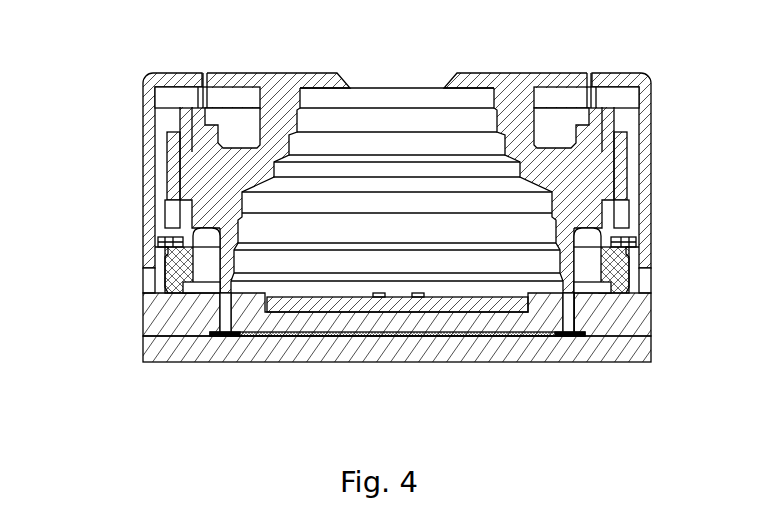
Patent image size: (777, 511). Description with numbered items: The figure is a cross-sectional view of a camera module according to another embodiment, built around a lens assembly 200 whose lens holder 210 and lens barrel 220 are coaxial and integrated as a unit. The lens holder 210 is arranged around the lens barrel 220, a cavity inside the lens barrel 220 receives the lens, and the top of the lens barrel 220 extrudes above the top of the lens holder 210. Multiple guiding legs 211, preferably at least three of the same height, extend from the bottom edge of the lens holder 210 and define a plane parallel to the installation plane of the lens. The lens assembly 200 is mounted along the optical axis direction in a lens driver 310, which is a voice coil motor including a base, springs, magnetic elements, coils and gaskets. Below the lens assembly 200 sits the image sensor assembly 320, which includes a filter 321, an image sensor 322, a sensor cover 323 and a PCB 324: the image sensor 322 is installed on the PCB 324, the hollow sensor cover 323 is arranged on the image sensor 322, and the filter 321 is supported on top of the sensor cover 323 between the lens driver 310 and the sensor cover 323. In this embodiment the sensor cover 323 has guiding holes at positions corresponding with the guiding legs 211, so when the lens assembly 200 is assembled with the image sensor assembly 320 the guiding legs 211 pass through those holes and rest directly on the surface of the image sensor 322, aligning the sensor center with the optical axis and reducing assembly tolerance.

The lens assembly 200 is at (195, 178).
The lens holder 210 is at (600, 212).
The guiding legs 211 is at (572, 325).
The lens barrel 220 is at (511, 85).
The lens driver 310 is at (143, 247).
The image sensor assembly 320 is at (172, 331).
The filter 321 is at (508, 307).
The image sensor 322 is at (447, 334).
The sensor cover 323 is at (590, 310).
The PCB 324 is at (373, 348).